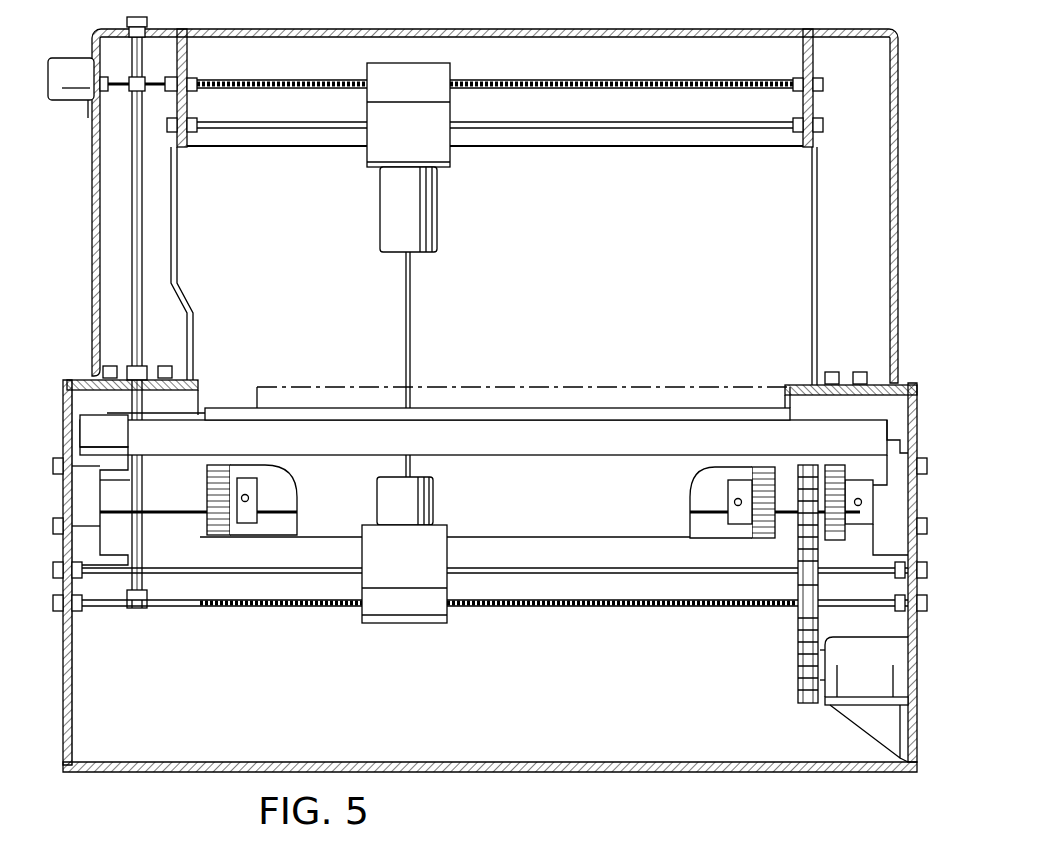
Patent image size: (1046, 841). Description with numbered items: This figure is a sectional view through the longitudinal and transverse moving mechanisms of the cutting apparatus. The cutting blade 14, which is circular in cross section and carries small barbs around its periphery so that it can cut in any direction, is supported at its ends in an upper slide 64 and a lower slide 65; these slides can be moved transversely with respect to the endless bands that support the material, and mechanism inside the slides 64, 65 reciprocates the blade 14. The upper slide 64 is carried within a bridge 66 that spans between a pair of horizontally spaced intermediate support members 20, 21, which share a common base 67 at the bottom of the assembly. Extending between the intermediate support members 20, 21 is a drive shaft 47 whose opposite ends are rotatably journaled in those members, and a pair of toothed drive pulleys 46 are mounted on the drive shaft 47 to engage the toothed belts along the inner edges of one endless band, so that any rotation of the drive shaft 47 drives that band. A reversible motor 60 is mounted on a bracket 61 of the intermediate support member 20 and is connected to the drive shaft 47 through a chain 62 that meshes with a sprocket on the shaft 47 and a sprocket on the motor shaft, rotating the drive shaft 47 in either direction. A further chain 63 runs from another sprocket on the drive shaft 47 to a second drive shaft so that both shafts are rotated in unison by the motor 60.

The blade 14 is at (410, 284).
The intermediate support member 20 is at (915, 776).
The intermediate support member 21 is at (73, 718).
The drive pulleys 46 is at (220, 465).
The drive shaft 47 is at (262, 468).
The reversible motor 60 is at (874, 665).
The bracket 61 is at (848, 725).
The chain 62 is at (797, 660).
The chain 63 is at (835, 545).
The upper slide 64 is at (452, 158).
The lower slide 65 is at (434, 492).
The bridge 66 is at (690, 30).
The common base 67 is at (532, 762).